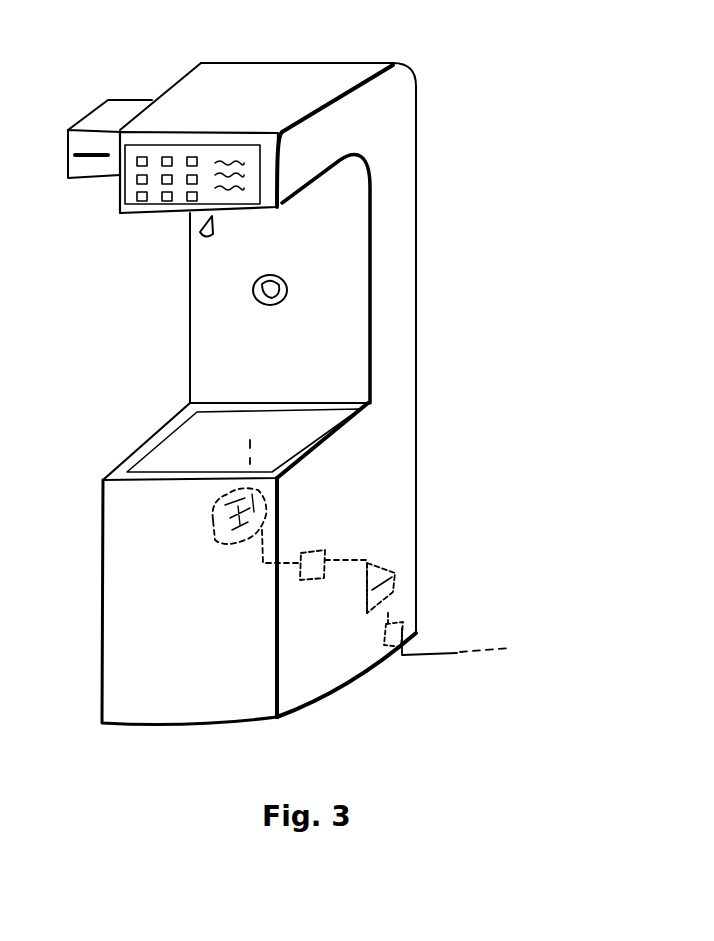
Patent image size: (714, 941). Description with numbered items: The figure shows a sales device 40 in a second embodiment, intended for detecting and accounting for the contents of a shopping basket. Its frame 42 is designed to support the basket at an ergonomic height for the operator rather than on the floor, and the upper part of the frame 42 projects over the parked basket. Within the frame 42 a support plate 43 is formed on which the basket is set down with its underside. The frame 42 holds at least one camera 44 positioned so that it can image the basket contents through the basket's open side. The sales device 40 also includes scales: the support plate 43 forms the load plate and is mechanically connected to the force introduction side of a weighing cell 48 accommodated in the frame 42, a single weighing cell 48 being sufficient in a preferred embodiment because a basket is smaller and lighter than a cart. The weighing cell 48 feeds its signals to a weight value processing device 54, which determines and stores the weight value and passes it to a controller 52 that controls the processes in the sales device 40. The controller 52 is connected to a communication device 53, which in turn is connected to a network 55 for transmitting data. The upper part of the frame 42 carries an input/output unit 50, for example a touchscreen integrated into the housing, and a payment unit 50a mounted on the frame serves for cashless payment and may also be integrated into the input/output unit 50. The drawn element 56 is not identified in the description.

The sales device 40 is at (318, 381).
The frame 42 is at (365, 103).
The support plate 43 is at (307, 425).
The camera 44 is at (225, 228).
The weighing cell 48 is at (257, 528).
The input/output unit 50 is at (158, 143).
The payment unit 50a is at (68, 147).
The controller 52 is at (395, 585).
The communication device 53 is at (403, 625).
The weight value processing device 54 is at (313, 575).
The network 55 is at (453, 660).
The control unit 56 is at (367, 560).